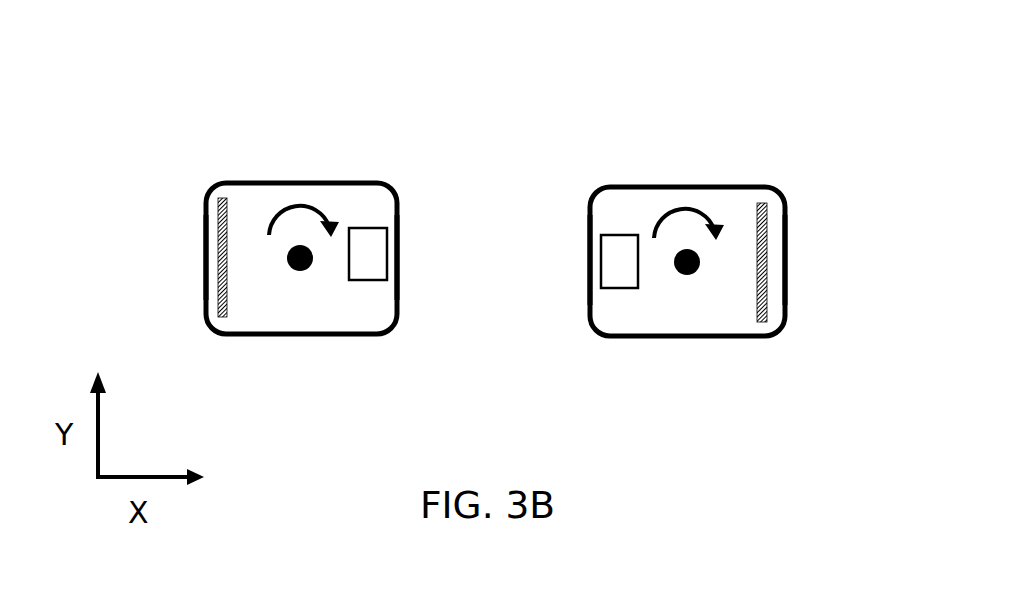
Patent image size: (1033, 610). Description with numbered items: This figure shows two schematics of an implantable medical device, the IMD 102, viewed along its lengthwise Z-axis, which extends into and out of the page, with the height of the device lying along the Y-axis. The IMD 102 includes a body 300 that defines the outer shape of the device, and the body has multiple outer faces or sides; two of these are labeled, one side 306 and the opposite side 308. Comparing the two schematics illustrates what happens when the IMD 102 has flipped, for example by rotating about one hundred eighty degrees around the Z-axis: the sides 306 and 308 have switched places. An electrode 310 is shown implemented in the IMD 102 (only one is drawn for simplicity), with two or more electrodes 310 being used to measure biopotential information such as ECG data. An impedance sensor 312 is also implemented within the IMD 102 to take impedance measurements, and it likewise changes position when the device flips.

The IMD 102 is at (209, 127).
The body 300 is at (322, 179).
The side 306 is at (200, 257).
The side 308 is at (400, 237).
The electrode 310 is at (218, 282).
The impedance sensor 312 is at (373, 265).